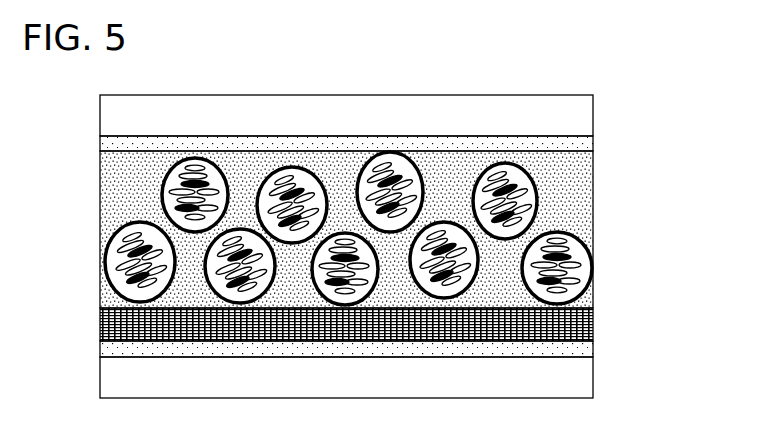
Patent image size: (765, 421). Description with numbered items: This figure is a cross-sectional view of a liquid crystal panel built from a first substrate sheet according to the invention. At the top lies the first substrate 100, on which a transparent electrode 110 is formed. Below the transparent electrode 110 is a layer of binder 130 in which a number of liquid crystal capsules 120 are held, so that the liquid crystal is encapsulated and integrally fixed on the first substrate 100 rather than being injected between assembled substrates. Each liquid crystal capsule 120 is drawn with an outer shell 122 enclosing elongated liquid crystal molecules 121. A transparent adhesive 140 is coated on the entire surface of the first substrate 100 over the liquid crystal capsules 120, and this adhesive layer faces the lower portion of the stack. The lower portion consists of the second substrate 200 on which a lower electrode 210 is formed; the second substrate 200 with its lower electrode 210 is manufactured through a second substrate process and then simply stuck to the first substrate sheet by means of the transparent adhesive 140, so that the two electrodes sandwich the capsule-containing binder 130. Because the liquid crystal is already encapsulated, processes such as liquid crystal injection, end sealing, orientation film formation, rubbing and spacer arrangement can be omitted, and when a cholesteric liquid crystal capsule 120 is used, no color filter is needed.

The first substrate 100 is at (578, 122).
The transparent electrode 110 is at (582, 143).
The binder 130 is at (582, 185).
The liquid crystal capsule 120 is at (356, 248).
The liquid crystal molecules 121 is at (107, 283).
The capsule shell 122 is at (120, 295).
The transparent adhesive 140 is at (593, 314).
The lower electrode 210 is at (582, 345).
The second substrate 200 is at (582, 379).